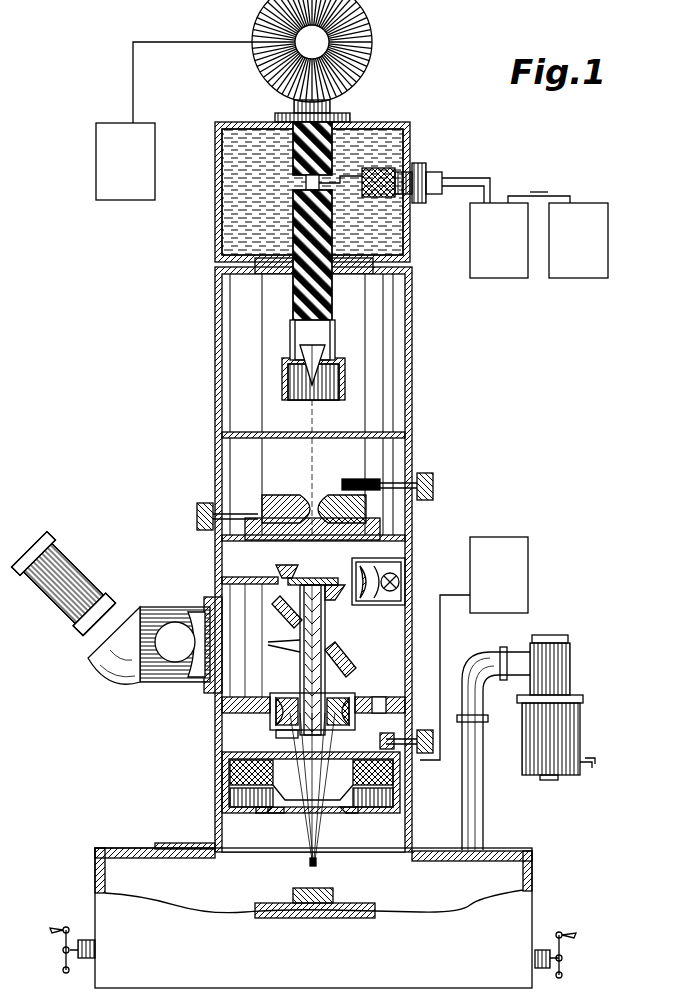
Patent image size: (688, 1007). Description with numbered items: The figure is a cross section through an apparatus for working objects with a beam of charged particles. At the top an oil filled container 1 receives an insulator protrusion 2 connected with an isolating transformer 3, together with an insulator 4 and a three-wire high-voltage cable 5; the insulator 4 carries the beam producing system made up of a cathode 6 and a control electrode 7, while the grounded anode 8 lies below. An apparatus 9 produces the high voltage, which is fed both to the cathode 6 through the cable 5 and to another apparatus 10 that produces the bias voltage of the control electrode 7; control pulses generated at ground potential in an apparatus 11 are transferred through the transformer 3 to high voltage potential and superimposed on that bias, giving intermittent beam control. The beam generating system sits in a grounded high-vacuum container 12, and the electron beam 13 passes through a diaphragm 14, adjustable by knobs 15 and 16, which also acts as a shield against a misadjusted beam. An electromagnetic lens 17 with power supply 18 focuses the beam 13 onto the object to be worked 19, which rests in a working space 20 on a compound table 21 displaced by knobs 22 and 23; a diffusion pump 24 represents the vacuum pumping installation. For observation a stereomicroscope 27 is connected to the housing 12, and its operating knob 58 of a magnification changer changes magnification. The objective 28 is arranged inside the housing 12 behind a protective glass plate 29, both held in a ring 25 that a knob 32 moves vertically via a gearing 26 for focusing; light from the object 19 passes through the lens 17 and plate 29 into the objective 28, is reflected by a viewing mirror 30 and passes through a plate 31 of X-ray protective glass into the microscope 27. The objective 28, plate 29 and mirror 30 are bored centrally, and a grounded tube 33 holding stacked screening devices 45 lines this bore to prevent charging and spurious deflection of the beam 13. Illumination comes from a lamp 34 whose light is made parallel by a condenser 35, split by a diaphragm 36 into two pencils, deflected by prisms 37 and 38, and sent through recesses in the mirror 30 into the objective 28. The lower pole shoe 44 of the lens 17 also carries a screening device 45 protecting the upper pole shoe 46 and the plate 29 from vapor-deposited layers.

The oil filled container 1 is at (410, 134).
The insulator protrusion 2 is at (333, 148).
The isolating transformer 3 is at (368, 52).
The insulator 4 is at (292, 214).
The 3-wire high-voltage cable 5 is at (430, 178).
The cathode 6 is at (322, 352).
The control electrode 7 is at (345, 378).
The anode 8 is at (336, 432).
The apparatus for producing high voltage 9 is at (585, 270).
The apparatus for producing bias voltage 10 is at (498, 270).
The apparatus for producing control pulses 11 is at (104, 128).
The container 12 is at (412, 392).
The electron beam 13 is at (314, 466).
The diaphragm 14 is at (300, 496).
The knob 15 is at (433, 482).
The knob 16 is at (197, 512).
The electromagnetic lens 17 is at (405, 796).
The power supply 18 is at (512, 566).
The object to be worked 19 is at (330, 894).
The working space 20 is at (516, 852).
The compound table 21 is at (376, 906).
The knob 22 is at (544, 950).
The knob 23 is at (84, 940).
The diffusion pump 24 is at (562, 672).
The ring 25 is at (392, 700).
The gearing 26 is at (412, 716).
The stereomicroscope 27 is at (76, 622).
The objective 28 is at (280, 694).
The glass plate 29 is at (276, 738).
The viewing mirror 30 is at (348, 662).
The plate of X-ray protective glass 31 is at (226, 624).
The knob 32 is at (426, 754).
The grounded tube 33 is at (325, 628).
The lamp 34 is at (405, 580).
The condenser 35 is at (380, 564).
The diaphragm 36 is at (332, 585).
The prism 37 is at (278, 568).
The prism 38 is at (310, 578).
The lower pole shoe 44 is at (346, 812).
The screening device 45 is at (284, 826).
The upper pole shoe 46 is at (268, 808).
The operating knob of magnification changer 58 is at (170, 628).